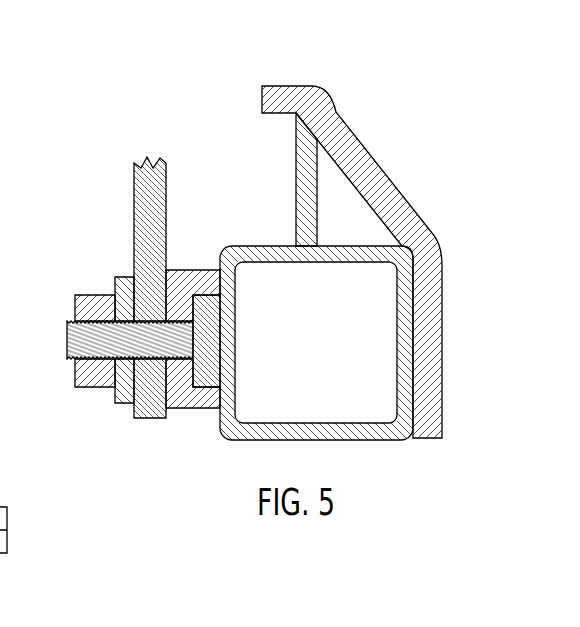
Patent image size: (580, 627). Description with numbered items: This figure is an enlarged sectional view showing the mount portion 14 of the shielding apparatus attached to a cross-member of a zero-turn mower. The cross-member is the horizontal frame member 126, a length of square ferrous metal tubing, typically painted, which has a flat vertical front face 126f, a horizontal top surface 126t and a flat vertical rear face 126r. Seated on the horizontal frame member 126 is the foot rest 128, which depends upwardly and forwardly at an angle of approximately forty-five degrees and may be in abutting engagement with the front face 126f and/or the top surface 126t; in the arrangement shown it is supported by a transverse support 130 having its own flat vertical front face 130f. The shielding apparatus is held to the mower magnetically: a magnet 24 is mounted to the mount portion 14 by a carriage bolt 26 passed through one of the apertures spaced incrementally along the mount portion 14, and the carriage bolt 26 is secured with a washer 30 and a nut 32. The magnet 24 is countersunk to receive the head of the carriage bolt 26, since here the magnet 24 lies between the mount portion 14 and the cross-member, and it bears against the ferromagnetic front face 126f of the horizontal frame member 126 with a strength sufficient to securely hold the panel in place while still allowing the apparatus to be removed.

The mount portion 14 is at (134, 235).
The magnet 24 is at (178, 408).
The carriage bolt 26 is at (65, 340).
The washer 30 is at (130, 402).
The nut 32 is at (93, 387).
The horizontal frame member 126 is at (328, 306).
The top surface 126t is at (333, 243).
The rear face 126r is at (419, 371).
The front face 126f is at (217, 416).
The foot rest 128 is at (408, 196).
The transverse support 130 is at (303, 152).
The front face 130f is at (294, 177).